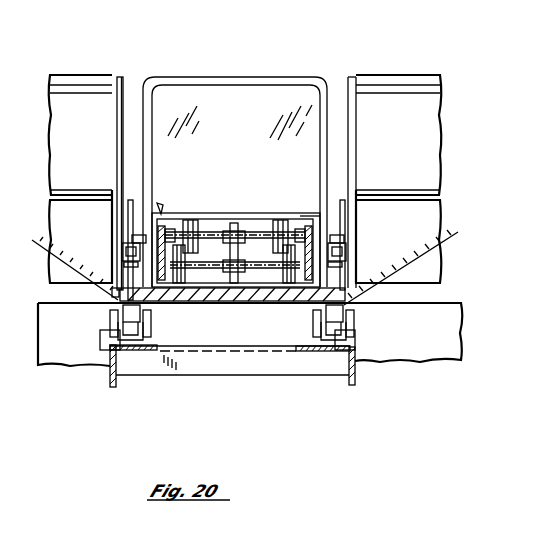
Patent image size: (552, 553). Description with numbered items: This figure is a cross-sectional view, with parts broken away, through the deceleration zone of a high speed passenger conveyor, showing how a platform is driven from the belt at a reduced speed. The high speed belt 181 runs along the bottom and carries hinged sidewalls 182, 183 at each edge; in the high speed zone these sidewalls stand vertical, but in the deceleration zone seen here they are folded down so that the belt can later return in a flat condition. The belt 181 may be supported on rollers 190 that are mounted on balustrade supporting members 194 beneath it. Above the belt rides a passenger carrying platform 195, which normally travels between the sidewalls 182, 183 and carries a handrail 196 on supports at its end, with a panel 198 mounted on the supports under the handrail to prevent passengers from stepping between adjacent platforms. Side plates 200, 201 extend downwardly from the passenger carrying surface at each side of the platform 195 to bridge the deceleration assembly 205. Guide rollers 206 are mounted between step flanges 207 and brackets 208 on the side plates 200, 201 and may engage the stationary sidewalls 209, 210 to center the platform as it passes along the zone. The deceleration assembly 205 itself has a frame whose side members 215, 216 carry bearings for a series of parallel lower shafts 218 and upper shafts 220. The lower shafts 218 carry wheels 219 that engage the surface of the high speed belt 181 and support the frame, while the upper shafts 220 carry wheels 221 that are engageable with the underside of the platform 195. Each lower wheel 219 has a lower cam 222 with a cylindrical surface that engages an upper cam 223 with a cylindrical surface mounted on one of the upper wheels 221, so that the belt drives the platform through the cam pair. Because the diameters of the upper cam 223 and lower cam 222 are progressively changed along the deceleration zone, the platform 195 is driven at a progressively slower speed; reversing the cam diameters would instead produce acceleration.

The high speed belt 181 is at (247, 302).
The hinged sidewall 182 is at (72, 268).
The hinged sidewall 183 is at (456, 240).
The roller 190 is at (113, 333).
The balustrade supporting member 194 is at (126, 370).
The passenger carrying platform 195 is at (300, 216).
The handrail 196 is at (247, 77).
The panel 198 is at (282, 105).
The side plate 200 is at (130, 218).
The side plate 201 is at (344, 210).
The deceleration assembly 205 is at (159, 207).
The guide roller 206 is at (121, 246).
The step flange 207 is at (110, 196).
The bracket 208 is at (121, 265).
The stationary sidewall 209 is at (119, 77).
The stationary sidewall 210 is at (352, 80).
The side member 215 is at (114, 300).
The side member 216 is at (318, 258).
The lower shaft 218 is at (212, 270).
The wheel 219 is at (170, 303).
The upper shaft 220 is at (234, 222).
The wheel 221 is at (226, 232).
The lower cam 222 is at (193, 303).
The upper cam 223 is at (188, 219).